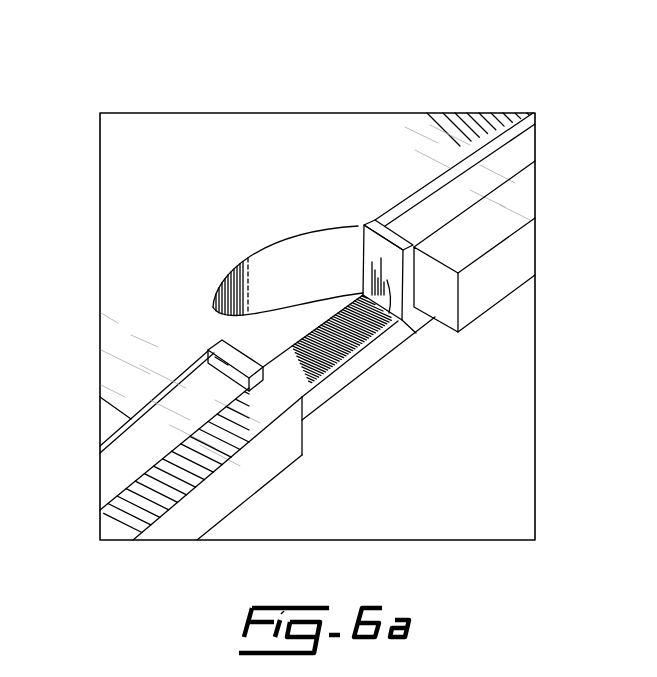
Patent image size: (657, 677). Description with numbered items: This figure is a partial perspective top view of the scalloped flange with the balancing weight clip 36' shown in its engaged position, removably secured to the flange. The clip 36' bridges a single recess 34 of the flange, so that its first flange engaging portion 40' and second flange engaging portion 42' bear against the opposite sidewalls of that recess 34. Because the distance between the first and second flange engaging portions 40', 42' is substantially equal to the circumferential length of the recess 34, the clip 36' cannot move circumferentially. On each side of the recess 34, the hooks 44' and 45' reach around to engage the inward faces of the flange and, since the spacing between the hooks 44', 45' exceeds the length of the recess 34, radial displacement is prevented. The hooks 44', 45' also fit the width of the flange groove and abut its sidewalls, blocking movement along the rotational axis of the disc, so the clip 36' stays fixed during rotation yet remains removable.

The recess 34 is at (298, 314).
The balancing weight clip 36' is at (317, 241).
The first flange engaging portion 40' is at (272, 442).
The second flange engaging portion 42' is at (492, 304).
The hook 44' is at (144, 336).
The hook 45' is at (505, 246).